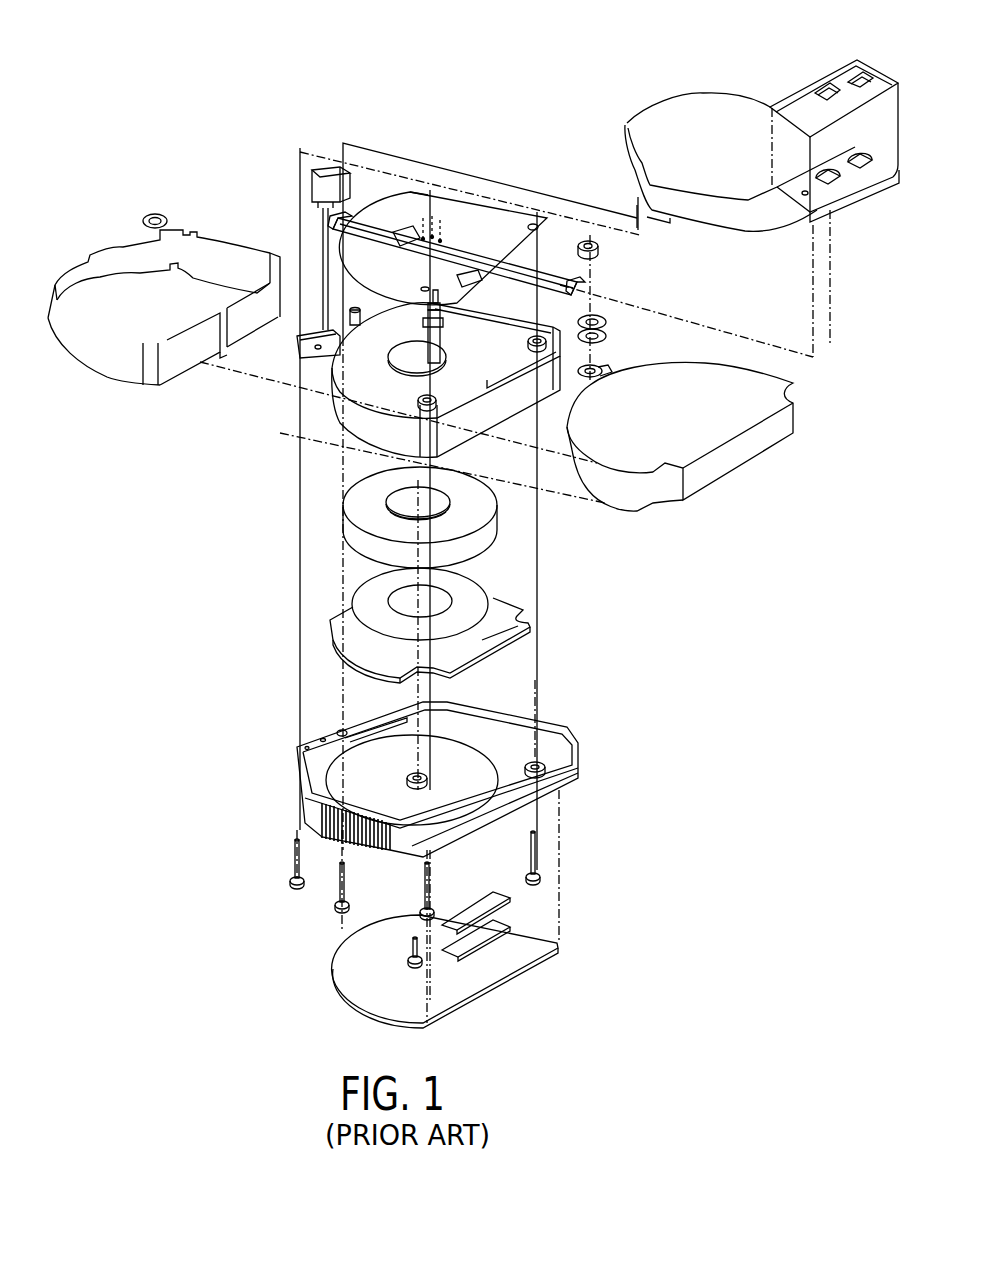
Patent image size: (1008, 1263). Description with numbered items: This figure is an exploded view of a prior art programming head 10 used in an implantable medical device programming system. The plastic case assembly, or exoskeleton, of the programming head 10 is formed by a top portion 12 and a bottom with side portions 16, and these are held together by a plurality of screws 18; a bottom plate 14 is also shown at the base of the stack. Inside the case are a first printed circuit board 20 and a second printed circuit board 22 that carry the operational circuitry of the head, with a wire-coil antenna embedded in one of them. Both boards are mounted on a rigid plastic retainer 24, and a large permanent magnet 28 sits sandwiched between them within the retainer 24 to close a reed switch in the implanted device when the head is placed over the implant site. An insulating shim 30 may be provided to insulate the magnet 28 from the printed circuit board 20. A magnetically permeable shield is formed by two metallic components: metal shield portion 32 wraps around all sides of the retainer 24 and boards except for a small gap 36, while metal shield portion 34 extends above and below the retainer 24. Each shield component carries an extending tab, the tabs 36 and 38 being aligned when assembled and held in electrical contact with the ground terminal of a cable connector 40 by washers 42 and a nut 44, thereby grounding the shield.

The programming head 10 is at (350, 90).
The top portion 12 is at (655, 122).
The bottom plate 14 is at (522, 952).
The bottom with side portions 16 is at (565, 750).
The screws 18 is at (292, 855).
The first printed circuit board 20 is at (525, 620).
The second printed circuit board 22 is at (460, 208).
The rigid retainer 24 is at (355, 420).
The permanent magnet 28 is at (490, 514).
The insulating shim 30 is at (350, 600).
The metal shield portion 32 is at (108, 360).
The metal shield portion 34 is at (718, 470).
The gap / extending tab 36 is at (163, 215).
The extending tab 38 is at (612, 367).
The cable connector 40 is at (318, 178).
The washers 42 is at (610, 315).
The nut 44 is at (600, 250).